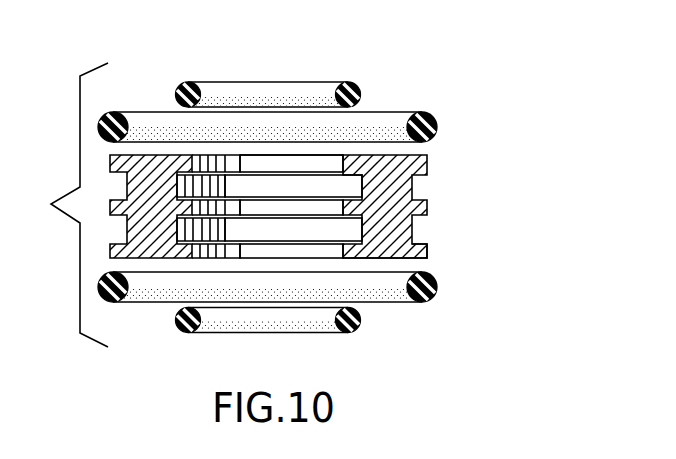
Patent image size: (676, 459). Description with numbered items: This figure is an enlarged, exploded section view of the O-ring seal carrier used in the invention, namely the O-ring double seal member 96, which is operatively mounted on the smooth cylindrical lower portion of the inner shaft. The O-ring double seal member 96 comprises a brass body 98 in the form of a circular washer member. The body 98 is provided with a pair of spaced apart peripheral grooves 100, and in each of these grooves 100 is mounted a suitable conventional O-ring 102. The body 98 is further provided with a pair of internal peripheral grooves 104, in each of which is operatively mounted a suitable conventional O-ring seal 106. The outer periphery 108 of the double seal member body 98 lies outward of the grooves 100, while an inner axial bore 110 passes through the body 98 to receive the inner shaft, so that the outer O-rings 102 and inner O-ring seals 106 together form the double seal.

The O-ring double seal member 96 is at (485, 200).
The brass body 98 is at (382, 222).
The peripheral grooves 100 is at (424, 177).
The O-ring 102 is at (437, 121).
The internal peripheral grooves 104 is at (180, 186).
The O-ring seal 106 is at (314, 85).
The outer periphery 108 is at (428, 257).
The inner axial bore 110 is at (332, 155).